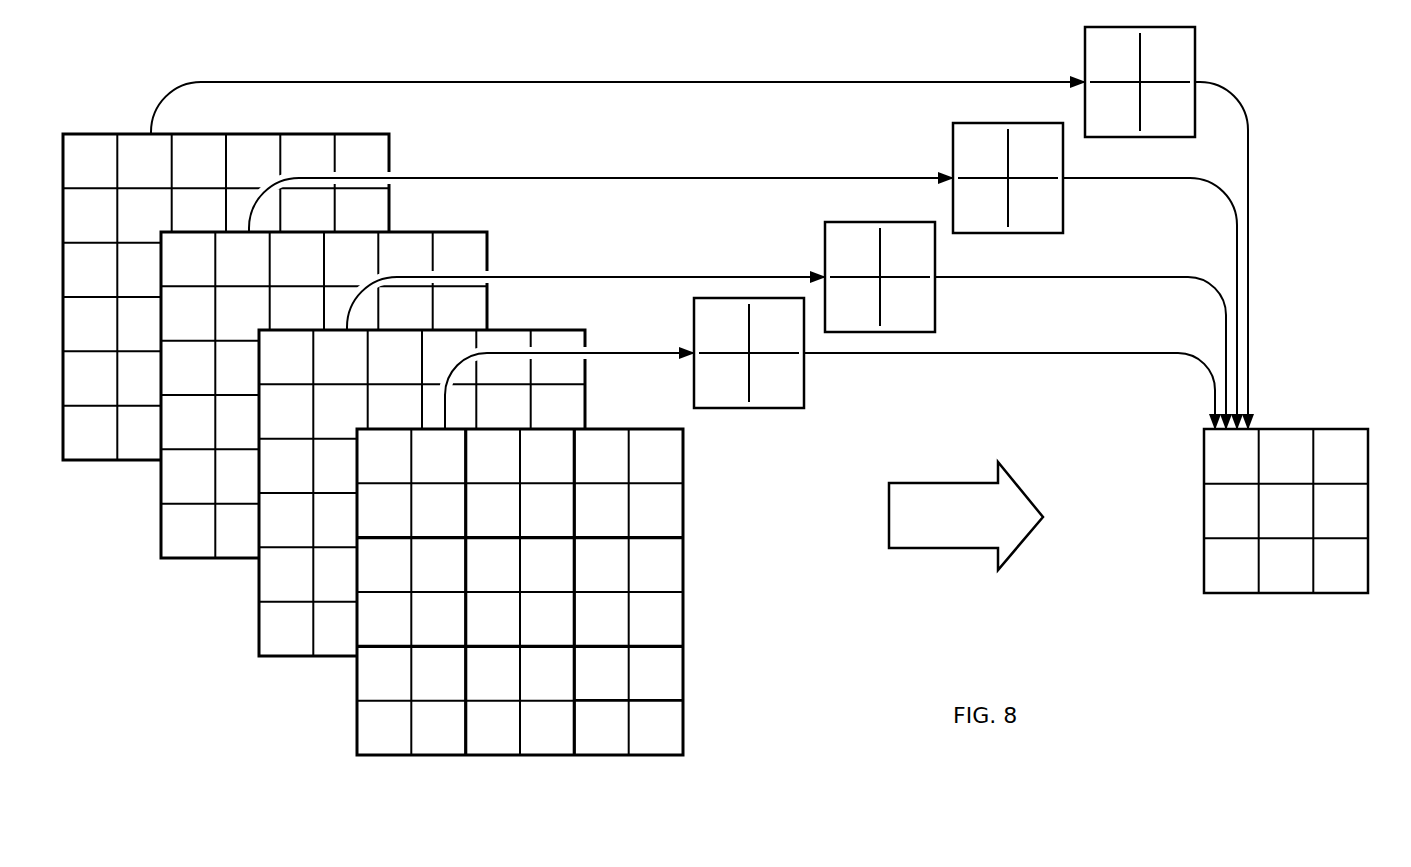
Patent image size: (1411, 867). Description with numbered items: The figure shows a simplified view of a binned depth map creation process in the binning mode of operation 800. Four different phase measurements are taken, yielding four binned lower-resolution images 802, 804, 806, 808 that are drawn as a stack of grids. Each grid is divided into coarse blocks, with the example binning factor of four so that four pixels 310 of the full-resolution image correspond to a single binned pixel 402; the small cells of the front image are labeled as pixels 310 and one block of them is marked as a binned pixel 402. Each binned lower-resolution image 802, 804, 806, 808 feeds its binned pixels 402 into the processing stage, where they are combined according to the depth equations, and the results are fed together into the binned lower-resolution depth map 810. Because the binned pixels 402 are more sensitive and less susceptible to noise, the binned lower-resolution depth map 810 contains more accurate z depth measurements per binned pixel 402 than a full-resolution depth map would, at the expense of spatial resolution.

The binning mode of operation 800 is at (1323, 103).
The binned lower-resolution image 802 is at (90, 463).
The binned lower-resolution image 804 is at (188, 560).
The binned lower-resolution image 806 is at (287, 658).
The binned lower-resolution image 808 is at (385, 756).
The binned lower-resolution depth map 810 is at (1335, 595).
The binned pixel 402 is at (1083, 53).
The pixel 310 is at (602, 747).